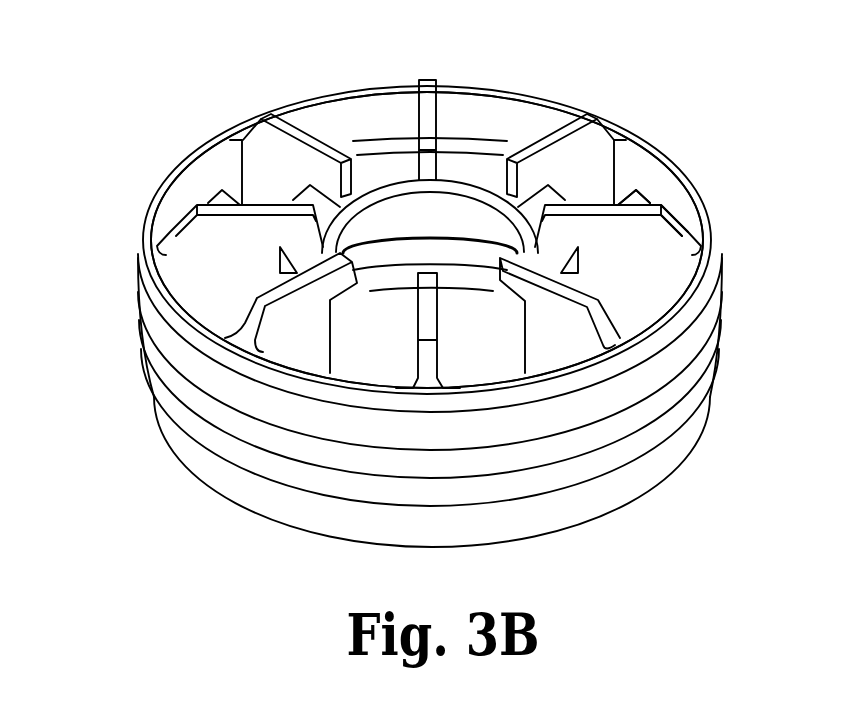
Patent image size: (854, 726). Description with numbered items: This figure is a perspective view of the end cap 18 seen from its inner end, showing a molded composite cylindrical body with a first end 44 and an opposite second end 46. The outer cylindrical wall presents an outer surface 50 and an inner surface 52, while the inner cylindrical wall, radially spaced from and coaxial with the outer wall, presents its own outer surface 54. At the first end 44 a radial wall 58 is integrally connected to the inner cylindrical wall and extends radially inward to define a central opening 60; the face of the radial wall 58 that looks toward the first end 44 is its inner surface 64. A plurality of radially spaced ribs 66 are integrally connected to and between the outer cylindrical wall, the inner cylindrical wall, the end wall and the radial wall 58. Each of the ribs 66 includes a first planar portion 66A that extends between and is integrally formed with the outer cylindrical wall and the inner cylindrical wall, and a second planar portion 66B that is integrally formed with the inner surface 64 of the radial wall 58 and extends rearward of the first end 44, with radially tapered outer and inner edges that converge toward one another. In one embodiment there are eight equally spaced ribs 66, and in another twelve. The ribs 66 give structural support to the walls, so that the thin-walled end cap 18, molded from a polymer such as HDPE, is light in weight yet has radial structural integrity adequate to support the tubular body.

The end cap 18 is at (418, 90).
The first end 44 is at (697, 205).
The second end 46 is at (583, 527).
The outer surface 50 is at (695, 320).
The inner surface 52 is at (650, 178).
The outer surface 54 is at (500, 360).
The radial wall 58 is at (347, 246).
The opening 60 is at (453, 220).
The inner surface 64 is at (380, 170).
The ribs 66 is at (298, 135).
The first planar portion 66A is at (645, 278).
The second planar portion 66B is at (632, 237).